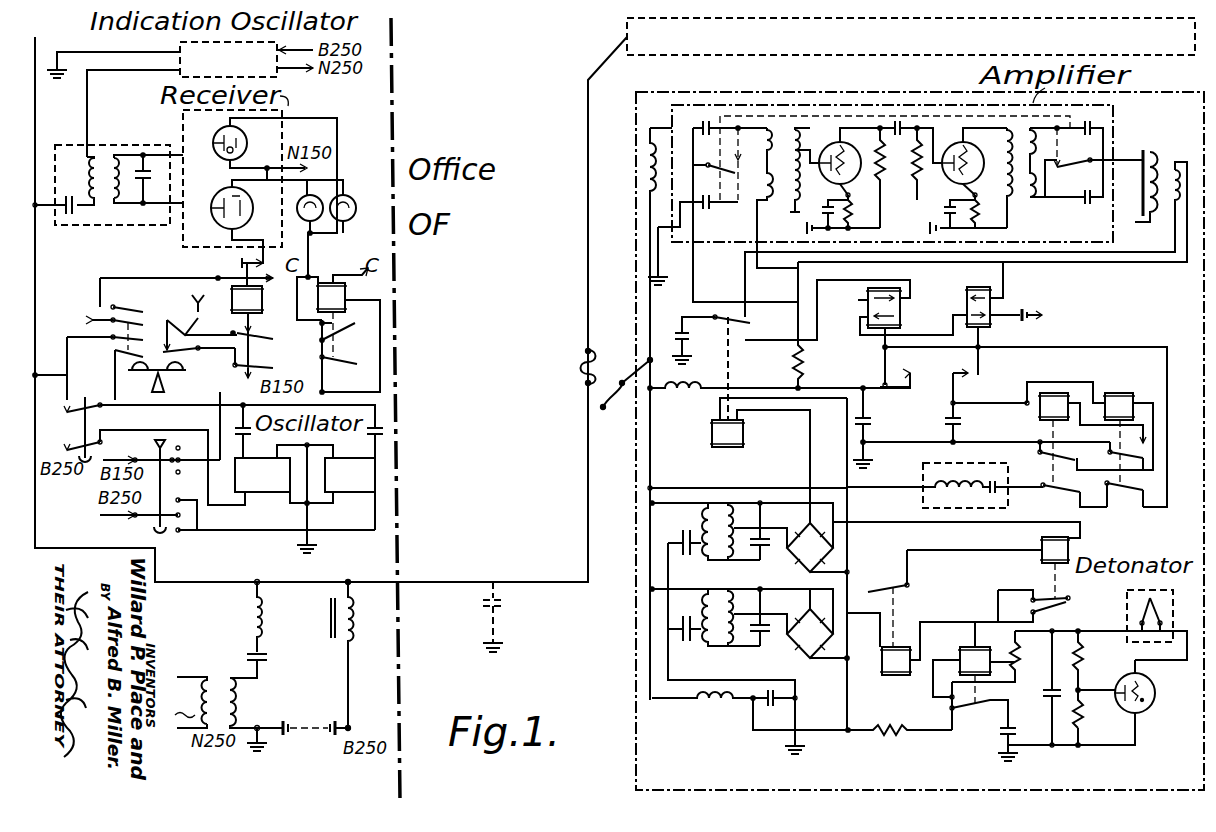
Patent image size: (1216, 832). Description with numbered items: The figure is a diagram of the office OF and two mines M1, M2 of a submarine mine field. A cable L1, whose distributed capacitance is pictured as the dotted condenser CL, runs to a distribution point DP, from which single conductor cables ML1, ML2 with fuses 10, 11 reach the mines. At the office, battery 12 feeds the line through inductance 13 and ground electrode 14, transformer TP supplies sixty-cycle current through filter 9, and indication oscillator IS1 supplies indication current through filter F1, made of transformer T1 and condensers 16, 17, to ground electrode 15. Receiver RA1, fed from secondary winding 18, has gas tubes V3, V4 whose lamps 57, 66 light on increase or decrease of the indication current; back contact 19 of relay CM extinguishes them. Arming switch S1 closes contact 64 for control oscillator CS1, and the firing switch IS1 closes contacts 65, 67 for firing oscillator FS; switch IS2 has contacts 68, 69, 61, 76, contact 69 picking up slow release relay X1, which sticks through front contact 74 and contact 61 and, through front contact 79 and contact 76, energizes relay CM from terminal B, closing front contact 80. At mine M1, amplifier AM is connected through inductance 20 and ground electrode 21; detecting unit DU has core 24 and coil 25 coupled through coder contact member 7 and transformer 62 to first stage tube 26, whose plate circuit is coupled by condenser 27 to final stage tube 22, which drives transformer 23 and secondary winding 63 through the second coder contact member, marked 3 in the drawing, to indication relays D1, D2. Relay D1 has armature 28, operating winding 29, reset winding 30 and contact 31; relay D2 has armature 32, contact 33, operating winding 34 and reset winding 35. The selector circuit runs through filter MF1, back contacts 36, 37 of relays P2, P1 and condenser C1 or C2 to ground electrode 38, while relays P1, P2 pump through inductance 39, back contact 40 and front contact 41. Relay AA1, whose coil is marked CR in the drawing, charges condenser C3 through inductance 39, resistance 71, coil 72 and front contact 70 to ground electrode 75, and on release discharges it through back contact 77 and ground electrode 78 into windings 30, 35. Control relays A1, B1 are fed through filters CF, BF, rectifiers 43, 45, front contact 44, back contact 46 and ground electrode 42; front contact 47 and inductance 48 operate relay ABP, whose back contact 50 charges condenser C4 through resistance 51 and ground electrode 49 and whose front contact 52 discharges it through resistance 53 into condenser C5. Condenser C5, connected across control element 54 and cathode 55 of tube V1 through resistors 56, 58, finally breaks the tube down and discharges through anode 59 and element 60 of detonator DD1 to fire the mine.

The relay contact 3 is at (723, 164).
The code contact member 7 is at (1072, 168).
The filter 9 is at (248, 620).
The fuse 10 is at (618, 408).
The fuse 11 is at (584, 366).
The battery 12 is at (290, 722).
The inductance 13 is at (356, 618).
The ground electrode 14 is at (270, 750).
The ground electrode 15 is at (50, 82).
The condenser 16 is at (68, 225).
The condenser 17 is at (135, 185).
The secondary winding 18 is at (143, 150).
The back contact 19 is at (362, 322).
The inductance 20 is at (646, 130).
The ground electrode 21 is at (672, 290).
The final stage tube 22 is at (838, 142).
The transformer 23 is at (795, 200).
The core 24 is at (1166, 155).
The coil 25 is at (1135, 222).
The first stage tube 26 is at (958, 180).
The condenser 27 is at (883, 158).
The armature 28 is at (884, 357).
The operating winding 29 is at (873, 302).
The reset winding 30 is at (873, 317).
The contact 31 is at (904, 373).
The armature 32 is at (983, 362).
The contact 33 is at (949, 374).
The operating winding 34 is at (967, 302).
The reset winding 35 is at (990, 330).
The back contact 36 is at (1078, 496).
The back contact 37 is at (1140, 494).
The ground electrode 38 is at (870, 465).
The inductance 39 is at (779, 393).
The back contact 40 is at (1085, 459).
The front contact 41 is at (1145, 440).
The ground electrode 42 is at (784, 752).
The rectifier 43 is at (790, 570).
The front contact 44 is at (869, 584).
The rectifier 45 is at (790, 657).
The back contact 46 is at (1038, 610).
The front contact 47 is at (1037, 589).
The inductance 48 is at (720, 704).
The ground electrode 49 is at (998, 768).
The back contact 50 is at (979, 715).
The resistance 51 is at (852, 728).
The front contact 52 is at (945, 700).
The resistance 53 is at (1001, 656).
The control element 54 is at (1094, 709).
The cathode 55 is at (1140, 712).
The resistor 56 is at (1094, 659).
The indication lamp 57 is at (351, 201).
The resistor 58 is at (1096, 734).
The anode 59 is at (1095, 678).
The detonator element 60 is at (1146, 607).
The normally closed contact 61 is at (192, 331).
The transformer 62 is at (1020, 200).
The secondary winding 63 is at (768, 128).
The contact 64 is at (180, 500).
The contact 65 is at (110, 420).
The indication lamp 66 is at (317, 201).
The contact 67 is at (66, 414).
The contact 68 is at (146, 343).
The contact 69 is at (149, 309).
The front contact 70 is at (748, 316).
The resistance 71 is at (803, 365).
The coil 72 is at (1170, 205).
The front contact 74 is at (270, 336).
The ground electrode 75 is at (696, 356).
The contact 76 is at (190, 352).
The back contact 77 is at (736, 333).
The ground electrode 78 is at (1047, 316).
The front contact 79 is at (268, 360).
The front contact 80 is at (330, 370).
The indication oscillator IS1 is at (228, 59).
The switch IS2 is at (164, 381).
The filter F1 is at (104, 171).
The transformer T1 is at (130, 161).
The receiver RA1 is at (183, 235).
The gas filled electron tube V3 is at (243, 143).
The gas filled electron tube V4 is at (221, 197).
The office relay X1 is at (260, 299).
The relay CM is at (347, 312).
The arming switch S1 is at (237, 481).
The firing oscillator FS is at (267, 480).
The control oscillator CS1 is at (355, 480).
The transformer TP is at (220, 678).
The condenser CL is at (505, 603).
The mine M1 is at (660, 96).
The mine M2 is at (624, 30).
The single conductor cable ML1 is at (624, 376).
The single conductor cable ML2 is at (586, 272).
The distribution point DP is at (600, 410).
The cable L1 is at (588, 522).
The amplifier AM is at (925, 102).
The detecting or control unit DU is at (1146, 167).
The condenser C1 is at (866, 425).
The condenser C2 is at (963, 421).
The condenser C3 is at (697, 336).
The condenser C4 is at (998, 748).
The condenser C5 is at (1036, 687).
The indication relay D1 is at (900, 290).
The indication relay D2 is at (990, 290).
The relay P1 is at (1118, 393).
The relay P2 is at (1054, 393).
The filter MF1 is at (923, 508).
The relay CR is at (712, 438).
The relay AA1 is at (743, 432).
The filter CF is at (716, 540).
The filter BF is at (716, 626).
The control relay B1 is at (888, 648).
The control relay A1 is at (1042, 545).
The detonator DD1 is at (1127, 592).
The control relay ABP is at (972, 648).
The gas filled tube V1 is at (1160, 690).
The terminal B is at (107, 319).